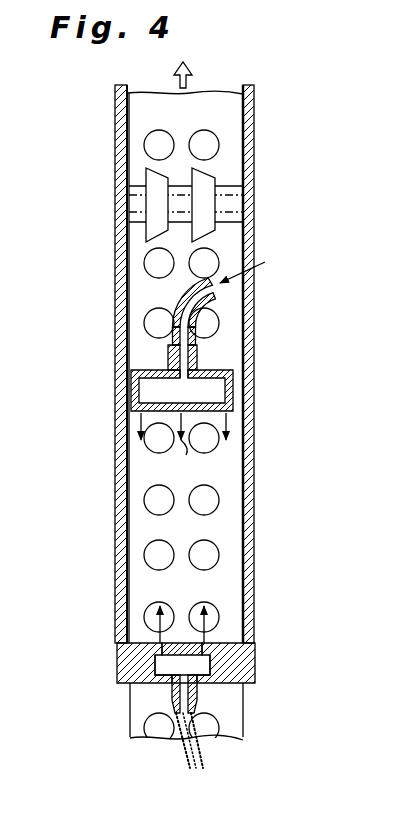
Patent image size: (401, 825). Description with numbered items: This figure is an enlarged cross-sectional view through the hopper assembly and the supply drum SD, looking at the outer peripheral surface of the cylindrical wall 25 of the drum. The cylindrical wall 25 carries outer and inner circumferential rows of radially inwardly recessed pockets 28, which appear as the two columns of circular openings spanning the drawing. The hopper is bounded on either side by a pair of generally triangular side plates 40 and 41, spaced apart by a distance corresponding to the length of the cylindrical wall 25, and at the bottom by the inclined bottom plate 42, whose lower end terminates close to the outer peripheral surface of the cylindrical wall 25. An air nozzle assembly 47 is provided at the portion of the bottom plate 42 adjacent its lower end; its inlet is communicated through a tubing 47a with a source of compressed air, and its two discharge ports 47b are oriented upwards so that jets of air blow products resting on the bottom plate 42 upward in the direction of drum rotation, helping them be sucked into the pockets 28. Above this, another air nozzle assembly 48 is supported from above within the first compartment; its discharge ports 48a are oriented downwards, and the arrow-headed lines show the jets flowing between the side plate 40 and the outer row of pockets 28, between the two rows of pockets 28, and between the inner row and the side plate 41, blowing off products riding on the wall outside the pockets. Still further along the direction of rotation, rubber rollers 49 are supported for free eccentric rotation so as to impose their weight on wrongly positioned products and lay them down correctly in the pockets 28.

The supply drum SD is at (148, 112).
The cylindrical wall 25 is at (150, 291).
The pockets 28 is at (152, 553).
The side plate 40 is at (117, 471).
The side plate 41 is at (243, 499).
The bottom plate 42 is at (140, 672).
The air nozzle assembly 47 is at (186, 665).
The tubing 47a is at (186, 748).
The discharge ports 47b is at (130, 653).
The air nozzle assembly 48 is at (220, 366).
The discharge ports 48a is at (290, 398).
The rubber rollers 49 is at (202, 179).